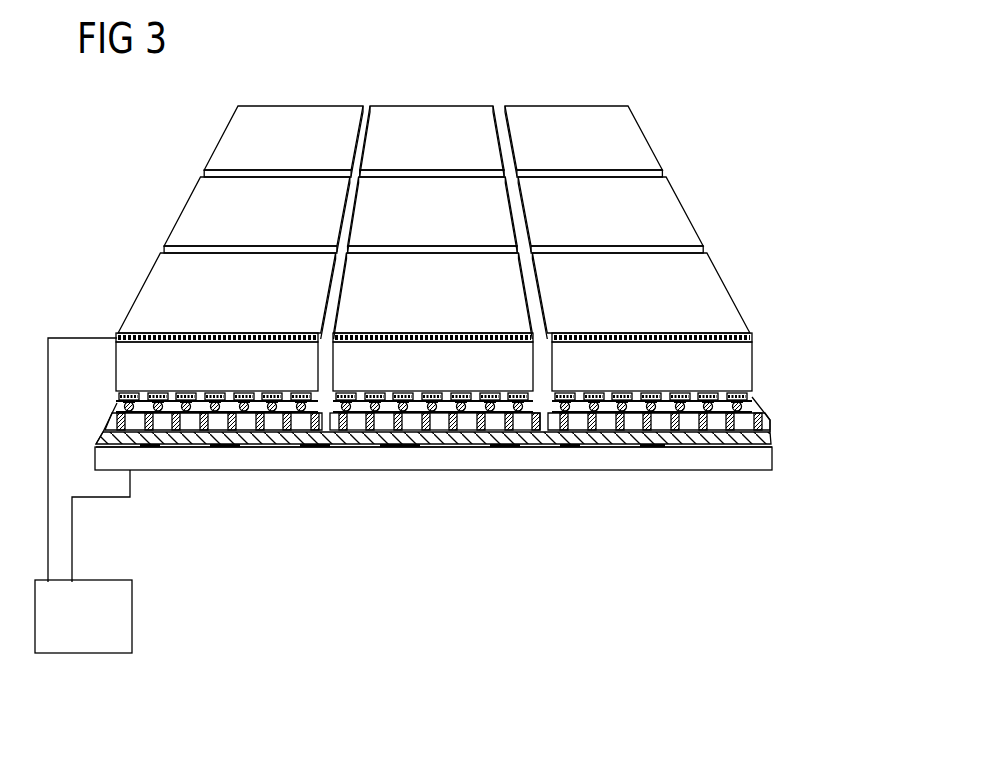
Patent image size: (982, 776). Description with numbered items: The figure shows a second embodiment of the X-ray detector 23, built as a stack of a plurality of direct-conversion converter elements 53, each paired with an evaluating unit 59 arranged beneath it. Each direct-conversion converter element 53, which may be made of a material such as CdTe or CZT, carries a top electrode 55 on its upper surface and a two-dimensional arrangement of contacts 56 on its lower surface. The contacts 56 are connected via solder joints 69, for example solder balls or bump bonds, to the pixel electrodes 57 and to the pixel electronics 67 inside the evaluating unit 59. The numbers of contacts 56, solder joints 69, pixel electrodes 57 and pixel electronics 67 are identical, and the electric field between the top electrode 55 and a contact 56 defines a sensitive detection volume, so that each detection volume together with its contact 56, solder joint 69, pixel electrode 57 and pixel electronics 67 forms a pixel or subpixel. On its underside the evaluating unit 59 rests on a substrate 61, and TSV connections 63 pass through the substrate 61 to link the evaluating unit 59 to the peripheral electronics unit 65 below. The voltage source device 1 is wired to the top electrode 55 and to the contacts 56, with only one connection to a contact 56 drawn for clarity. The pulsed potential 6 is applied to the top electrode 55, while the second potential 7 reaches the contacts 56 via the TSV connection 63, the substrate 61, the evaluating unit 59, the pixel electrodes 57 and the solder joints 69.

The X-ray detector 23 is at (190, 131).
The top electrode 55 is at (115, 335).
The direct-conversion converter element 53 is at (737, 358).
The contacts 56 is at (750, 395).
The evaluating unit 59 is at (775, 418).
The substrate 61 is at (771, 432).
The TSV connections 63 is at (610, 447).
The peripheral electronics unit 65 is at (763, 457).
The solder joints 69 is at (117, 407).
The pixel electrodes 57 is at (278, 447).
The pixel electronics 67 is at (422, 428).
The pulsed potential 6 is at (48, 538).
The second potential 7 is at (72, 567).
The voltage source device 1 is at (132, 622).